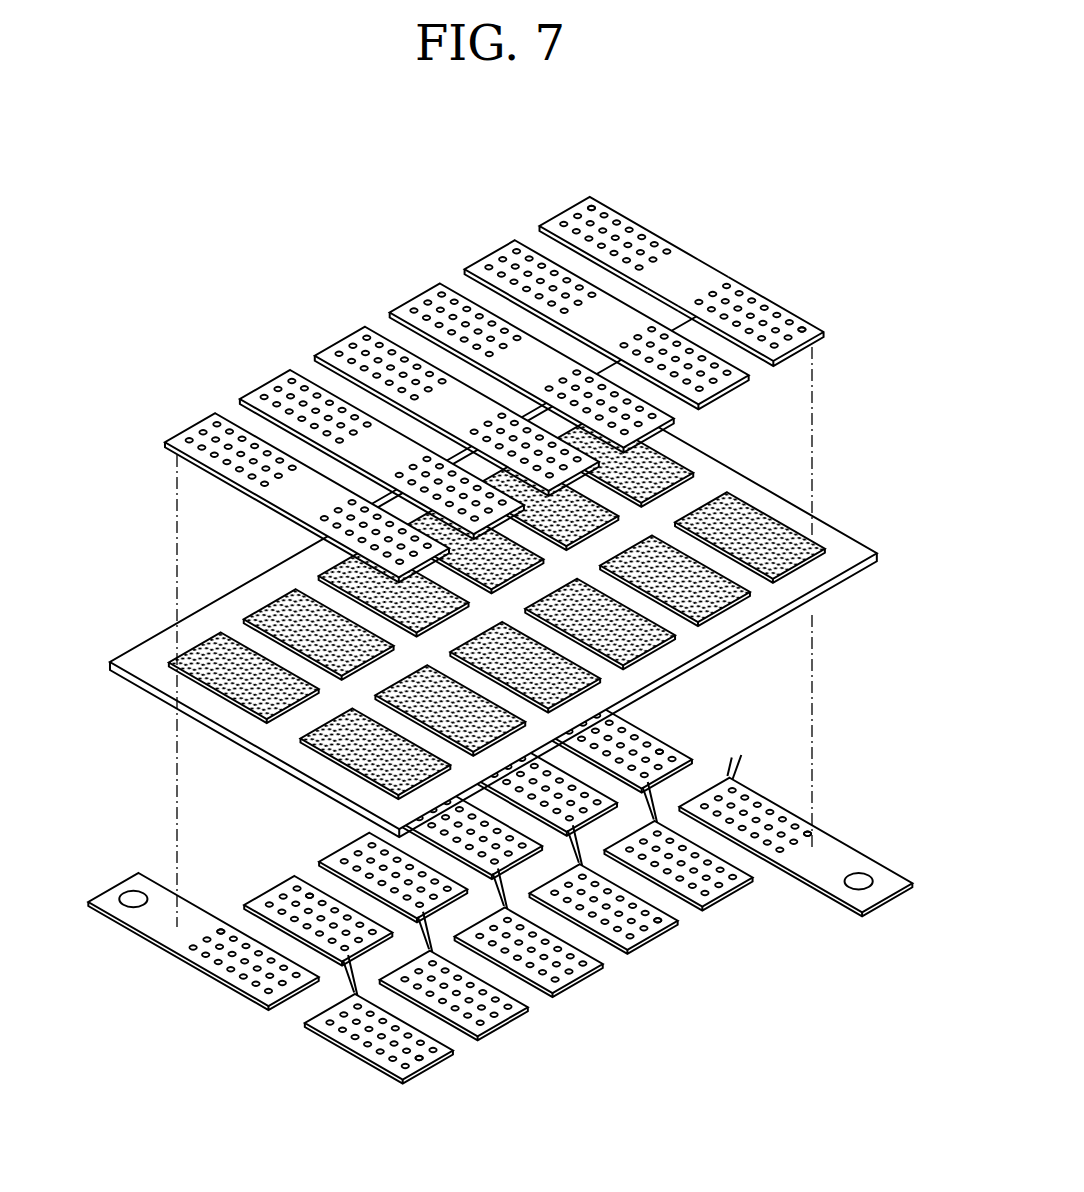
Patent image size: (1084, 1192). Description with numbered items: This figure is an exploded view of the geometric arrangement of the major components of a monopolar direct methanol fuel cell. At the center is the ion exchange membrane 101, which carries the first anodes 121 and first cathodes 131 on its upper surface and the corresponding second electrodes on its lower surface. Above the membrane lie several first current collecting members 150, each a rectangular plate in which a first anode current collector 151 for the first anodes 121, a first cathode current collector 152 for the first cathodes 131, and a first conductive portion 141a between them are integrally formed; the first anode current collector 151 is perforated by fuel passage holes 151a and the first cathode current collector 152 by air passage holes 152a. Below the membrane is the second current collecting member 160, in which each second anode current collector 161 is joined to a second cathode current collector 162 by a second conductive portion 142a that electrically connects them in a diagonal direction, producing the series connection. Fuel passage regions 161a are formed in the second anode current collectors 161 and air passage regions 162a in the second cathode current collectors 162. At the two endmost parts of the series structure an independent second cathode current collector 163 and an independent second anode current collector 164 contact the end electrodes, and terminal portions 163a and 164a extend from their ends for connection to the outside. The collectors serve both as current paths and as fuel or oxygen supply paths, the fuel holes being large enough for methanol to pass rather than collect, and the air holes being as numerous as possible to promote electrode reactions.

The ion exchange membrane 101 is at (495, 611).
The first anodes 121 is at (678, 462).
The first cathodes 131 is at (763, 527).
The first conductive portion 141a is at (742, 269).
The first current collecting member 150 is at (537, 361).
The first anode current collector 151 is at (606, 192).
The fuel passage holes 151a is at (592, 205).
The first cathode current collector 152 is at (746, 270).
The air passage holes 152a is at (855, 308).
The second current collecting member 160 is at (504, 891).
The second anode current collector 161 is at (728, 898).
The fuel passage regions 161a is at (805, 832).
The second cathode current collector 162 is at (273, 886).
The air passage regions 162a is at (223, 928).
The second conductive portion 142a is at (658, 800).
The independent second cathode current collector 163 is at (167, 948).
The terminal portion 163a is at (122, 880).
The independent second anode current collector 164 is at (790, 877).
The terminal portion 164a is at (883, 887).